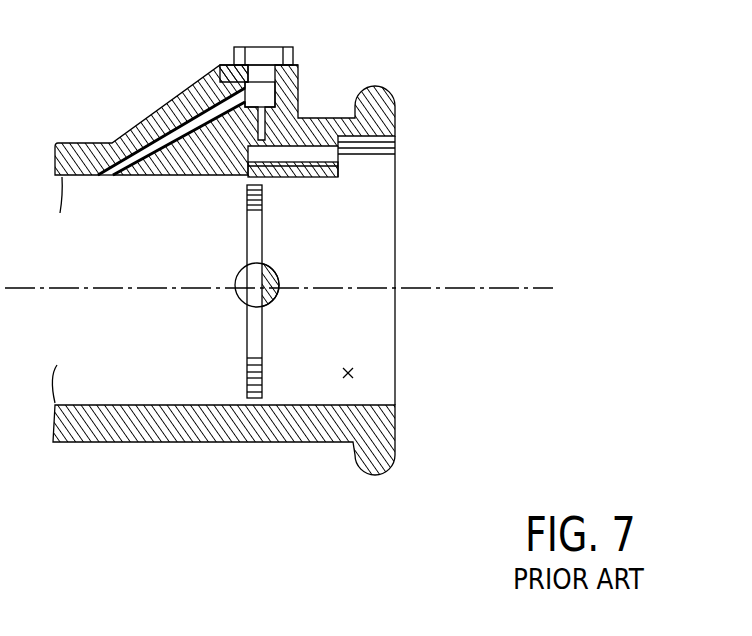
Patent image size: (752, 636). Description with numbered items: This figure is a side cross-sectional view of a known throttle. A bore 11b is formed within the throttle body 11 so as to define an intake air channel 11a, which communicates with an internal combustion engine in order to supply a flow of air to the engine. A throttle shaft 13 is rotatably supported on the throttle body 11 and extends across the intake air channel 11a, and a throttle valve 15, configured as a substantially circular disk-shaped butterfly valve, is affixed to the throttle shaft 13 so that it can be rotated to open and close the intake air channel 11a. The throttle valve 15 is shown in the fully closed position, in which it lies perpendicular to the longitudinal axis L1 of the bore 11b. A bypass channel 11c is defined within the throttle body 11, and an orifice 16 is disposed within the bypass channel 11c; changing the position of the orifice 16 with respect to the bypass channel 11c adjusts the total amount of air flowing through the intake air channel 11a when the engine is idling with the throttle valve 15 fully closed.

The throttle body 11 is at (383, 85).
The intake air channel 11a is at (353, 372).
The bore 11b is at (138, 176).
The bypass channel 11c is at (163, 140).
The throttle shaft 13 is at (278, 268).
The throttle valve 15 is at (258, 221).
The orifice 16 is at (298, 117).
The longitudinal axis L1 is at (299, 291).